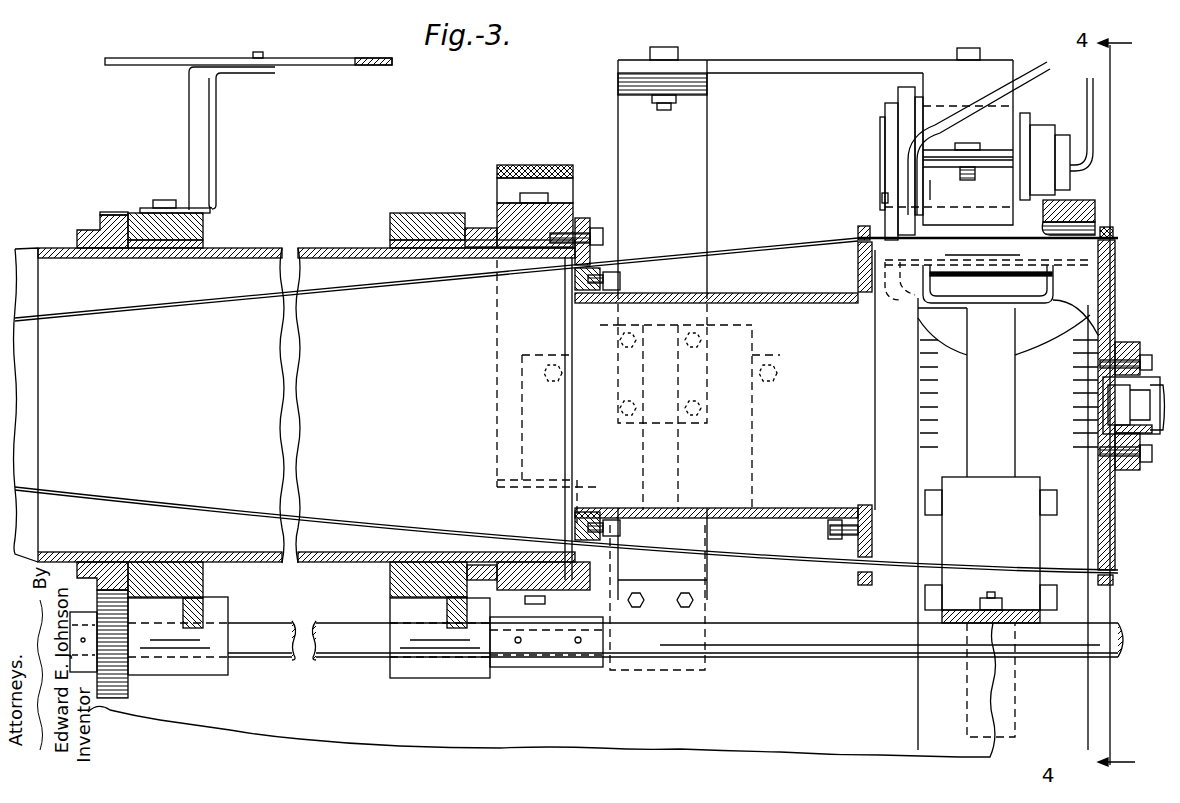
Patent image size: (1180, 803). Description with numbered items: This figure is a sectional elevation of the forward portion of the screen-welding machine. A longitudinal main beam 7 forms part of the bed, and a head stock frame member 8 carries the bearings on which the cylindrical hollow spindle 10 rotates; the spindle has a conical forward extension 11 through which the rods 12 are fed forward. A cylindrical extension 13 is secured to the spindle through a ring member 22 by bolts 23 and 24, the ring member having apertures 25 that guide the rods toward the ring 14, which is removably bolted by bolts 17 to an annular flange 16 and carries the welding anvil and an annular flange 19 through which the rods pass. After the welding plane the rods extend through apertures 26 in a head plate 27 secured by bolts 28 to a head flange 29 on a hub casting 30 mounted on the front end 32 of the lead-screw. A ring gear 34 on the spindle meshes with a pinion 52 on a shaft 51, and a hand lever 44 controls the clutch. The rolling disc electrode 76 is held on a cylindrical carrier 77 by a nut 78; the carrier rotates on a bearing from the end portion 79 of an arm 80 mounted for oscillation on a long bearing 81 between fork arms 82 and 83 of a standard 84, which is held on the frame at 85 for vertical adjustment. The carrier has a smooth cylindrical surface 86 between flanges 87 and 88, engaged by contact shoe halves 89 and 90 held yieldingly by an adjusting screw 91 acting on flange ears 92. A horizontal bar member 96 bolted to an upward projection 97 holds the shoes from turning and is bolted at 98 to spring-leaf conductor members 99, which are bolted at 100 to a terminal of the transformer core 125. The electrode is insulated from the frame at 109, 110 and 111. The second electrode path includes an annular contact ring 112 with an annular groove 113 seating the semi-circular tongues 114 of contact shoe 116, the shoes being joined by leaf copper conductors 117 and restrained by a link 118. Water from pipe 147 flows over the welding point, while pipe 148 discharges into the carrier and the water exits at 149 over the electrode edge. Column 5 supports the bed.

The column 5 is at (894, 566).
The longitudinal main beam 7 is at (690, 738).
The head stock frame member 8 is at (204, 226).
The cylindrical hollow spindle 10 is at (280, 247).
The conical forward extension 11 is at (20, 248).
The rods 12 is at (159, 305).
The cylindrical extension 13 is at (718, 298).
The ring 14 is at (858, 253).
The annular flange 16 is at (850, 545).
The bolts 17 is at (879, 532).
The annular flange 19 is at (857, 230).
The ring member 22 is at (595, 254).
The bolts 23 is at (603, 228).
The bolts 24 is at (621, 280).
The apertures 25 is at (545, 262).
The apertures 26 is at (1113, 568).
The head plate 27 is at (1107, 305).
The bolts 28 is at (1146, 360).
The head flange 29 is at (1140, 345).
The hub casting 30 is at (1158, 466).
The front end of lead-screw 32 is at (1156, 440).
The ring gear 34 is at (112, 212).
The hand lever 44 is at (311, 58).
The shaft 51 is at (289, 658).
The pinion 52 is at (130, 690).
The disc electrode 76 is at (898, 90).
The cylindrical carrier 77 is at (880, 125).
The nut 78 is at (887, 109).
The end portion of arm 79 is at (1045, 123).
The arm 80 is at (1045, 280).
The long bearing 81 is at (1040, 262).
The fork arm 82 is at (898, 295).
The fork arm 83 is at (1100, 274).
The standard 84 is at (1010, 455).
The frame mounting 85 is at (1030, 545).
The cylindrical surface 86 is at (941, 108).
The flange 87 is at (919, 97).
The flange 88 is at (1010, 125).
The contact shoe half 89 is at (995, 80).
The contact shoe half 90 is at (930, 190).
The adjusting screw 91 is at (975, 143).
The flange ears 92 is at (976, 172).
The horizontal bar member 96 is at (757, 60).
The upward projection 97 is at (940, 73).
The bolt 98 is at (672, 47).
The spring-leaf conductor members 99 is at (650, 130).
The bolt 100 is at (700, 342).
The insulation 109 is at (930, 276).
The insulation 110 is at (1082, 200).
The insulation 111 is at (1096, 225).
The annular contact ring 112 is at (497, 225).
The annular groove 113 is at (535, 604).
The semi-circular tongues 114 is at (528, 242).
The contact shoe 116 is at (565, 210).
The leaf copper conductors 117 is at (566, 166).
The link 118 is at (520, 198).
The transformer core 125 is at (684, 458).
The water pipe 147 is at (1048, 66).
The water pipe 148 is at (1094, 137).
The water outlet point 149 is at (882, 198).